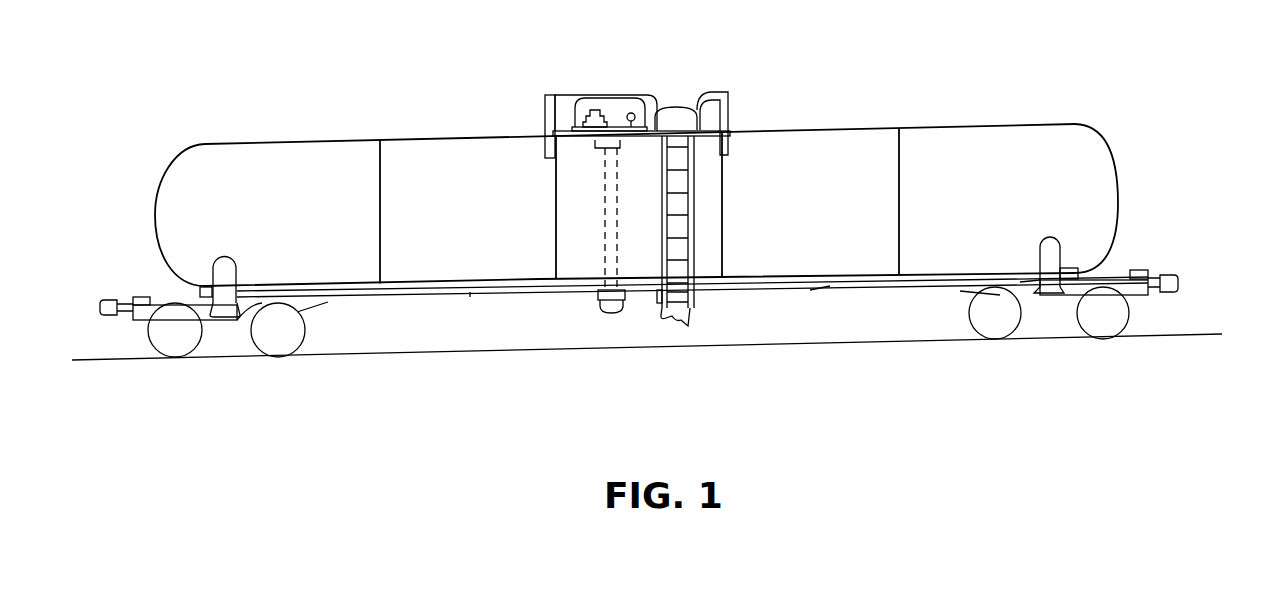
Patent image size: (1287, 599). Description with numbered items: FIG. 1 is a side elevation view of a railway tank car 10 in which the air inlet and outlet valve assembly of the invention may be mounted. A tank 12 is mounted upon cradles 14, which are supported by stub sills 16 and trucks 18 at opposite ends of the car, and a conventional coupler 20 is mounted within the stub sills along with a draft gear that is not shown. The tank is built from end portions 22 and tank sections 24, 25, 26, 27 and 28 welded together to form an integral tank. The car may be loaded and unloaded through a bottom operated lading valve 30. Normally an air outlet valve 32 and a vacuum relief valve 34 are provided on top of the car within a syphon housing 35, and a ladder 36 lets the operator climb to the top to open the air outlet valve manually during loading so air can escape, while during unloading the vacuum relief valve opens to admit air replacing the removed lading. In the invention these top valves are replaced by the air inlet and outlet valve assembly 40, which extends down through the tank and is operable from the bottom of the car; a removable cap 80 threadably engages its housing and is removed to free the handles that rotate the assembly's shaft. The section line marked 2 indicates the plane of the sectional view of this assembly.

The railway tank car 10 is at (1128, 190).
The tank 12 is at (863, 110).
The cradles 14 is at (1048, 255).
The stub sills 16 is at (183, 302).
The trucks 18 is at (258, 302).
The coupler 20 is at (1180, 282).
The end portions 22 is at (183, 170).
The tank section 24 is at (306, 231).
The tank section 25 is at (480, 227).
The tank section 26 is at (658, 224).
The tank section 27 is at (823, 221).
The tank section 28 is at (998, 219).
The bottom operated lading valve 30 is at (678, 323).
The air outlet valve 32 is at (636, 117).
The vacuum relief valve 34 is at (593, 110).
The syphon housing 35 is at (577, 103).
The ladder 36 is at (697, 247).
The air inlet and outlet valve assembly 40 is at (597, 204).
The removable cap 80 is at (603, 303).
The section line 2- 2 is at (653, 323).